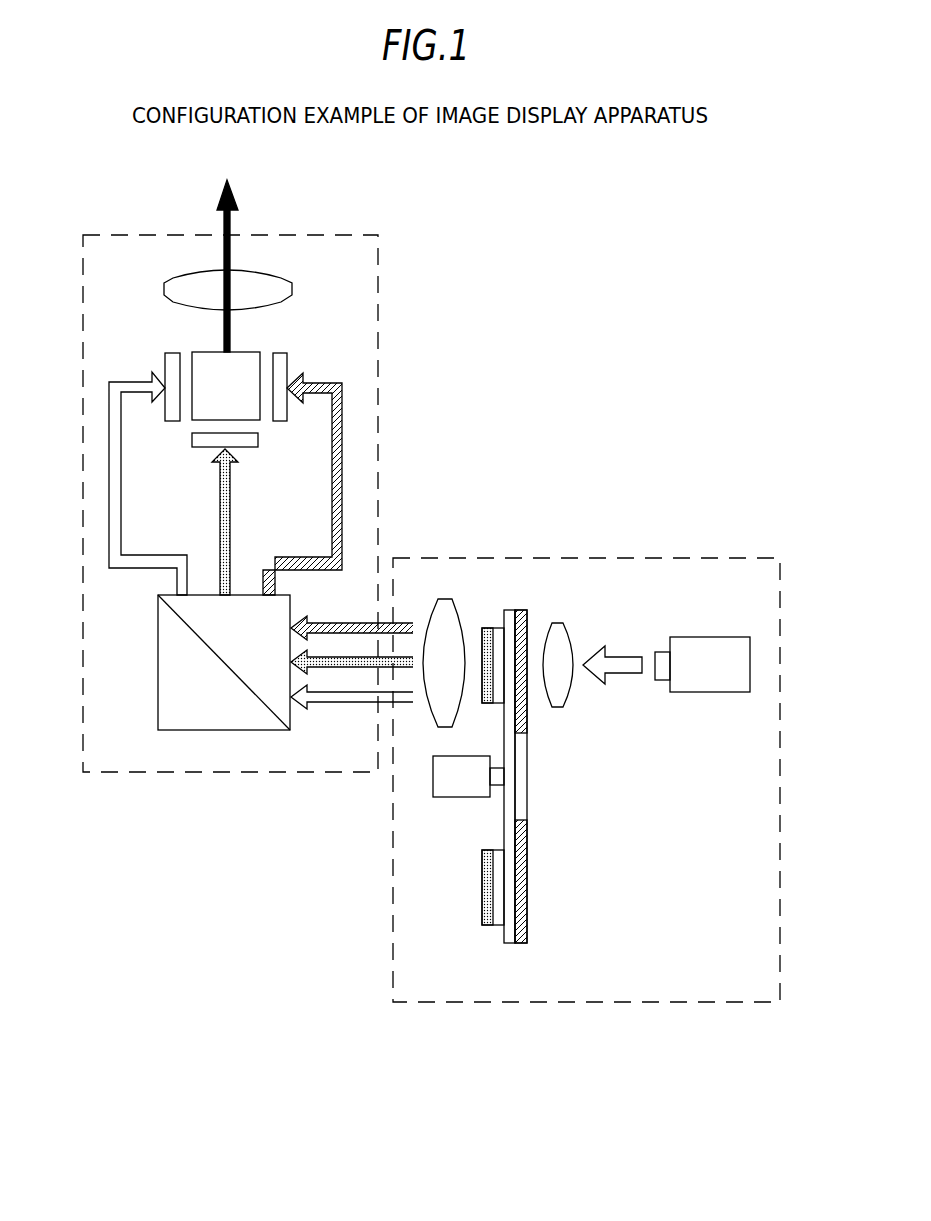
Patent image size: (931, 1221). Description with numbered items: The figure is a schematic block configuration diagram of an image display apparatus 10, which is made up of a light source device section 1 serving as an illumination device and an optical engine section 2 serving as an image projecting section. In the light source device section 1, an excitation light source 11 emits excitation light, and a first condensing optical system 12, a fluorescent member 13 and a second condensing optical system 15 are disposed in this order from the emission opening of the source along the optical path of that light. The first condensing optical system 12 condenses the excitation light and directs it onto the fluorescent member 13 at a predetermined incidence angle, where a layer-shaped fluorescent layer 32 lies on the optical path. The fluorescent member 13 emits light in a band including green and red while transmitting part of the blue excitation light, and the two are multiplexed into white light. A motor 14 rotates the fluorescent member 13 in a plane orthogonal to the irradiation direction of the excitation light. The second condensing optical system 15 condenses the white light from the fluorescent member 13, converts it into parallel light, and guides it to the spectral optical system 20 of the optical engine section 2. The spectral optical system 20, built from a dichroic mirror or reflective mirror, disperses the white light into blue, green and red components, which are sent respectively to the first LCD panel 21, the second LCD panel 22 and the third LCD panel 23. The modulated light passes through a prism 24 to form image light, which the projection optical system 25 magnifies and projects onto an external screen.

The light source device section 1 is at (617, 1003).
The optical engine section 2 is at (268, 773).
The image display apparatus 10 is at (572, 285).
The excitation light source 11 is at (705, 693).
The first condensing optical system 12 is at (568, 633).
The fluorescent member 13 is at (548, 860).
The motor 14 is at (458, 798).
The second condensing optical system 15 is at (457, 613).
The spectral optical system 20 is at (180, 731).
The first LCD panel 21 is at (170, 352).
The second LCD panel 22 is at (258, 440).
The third LCD panel 23 is at (290, 356).
The prism 24 is at (243, 362).
The projection optical system 25 is at (268, 276).
The fluorescent layer 32 is at (485, 926).